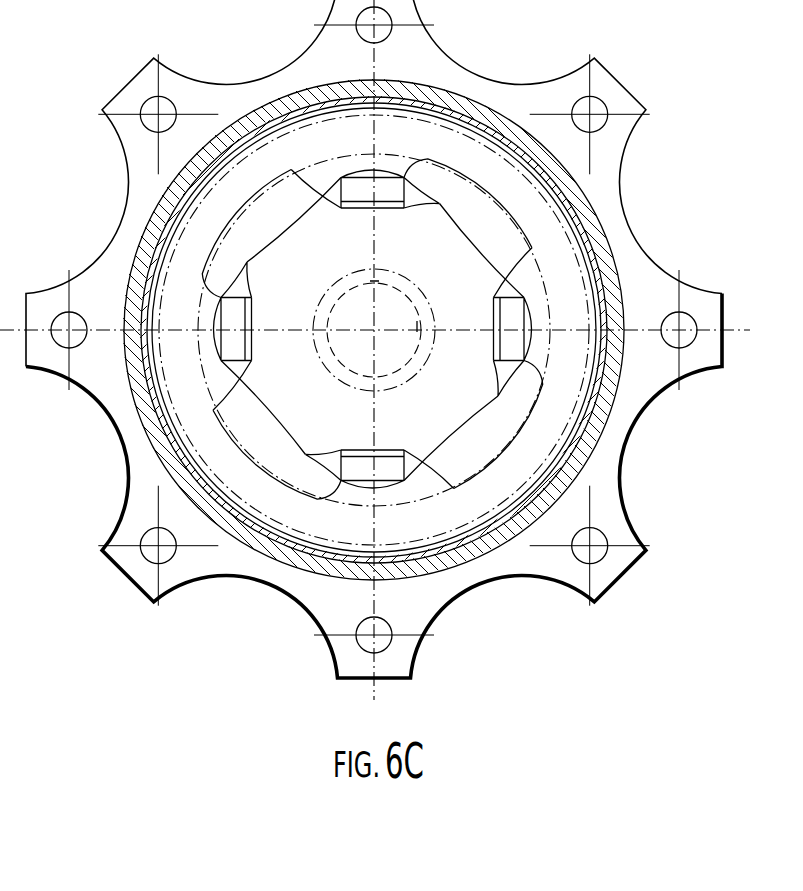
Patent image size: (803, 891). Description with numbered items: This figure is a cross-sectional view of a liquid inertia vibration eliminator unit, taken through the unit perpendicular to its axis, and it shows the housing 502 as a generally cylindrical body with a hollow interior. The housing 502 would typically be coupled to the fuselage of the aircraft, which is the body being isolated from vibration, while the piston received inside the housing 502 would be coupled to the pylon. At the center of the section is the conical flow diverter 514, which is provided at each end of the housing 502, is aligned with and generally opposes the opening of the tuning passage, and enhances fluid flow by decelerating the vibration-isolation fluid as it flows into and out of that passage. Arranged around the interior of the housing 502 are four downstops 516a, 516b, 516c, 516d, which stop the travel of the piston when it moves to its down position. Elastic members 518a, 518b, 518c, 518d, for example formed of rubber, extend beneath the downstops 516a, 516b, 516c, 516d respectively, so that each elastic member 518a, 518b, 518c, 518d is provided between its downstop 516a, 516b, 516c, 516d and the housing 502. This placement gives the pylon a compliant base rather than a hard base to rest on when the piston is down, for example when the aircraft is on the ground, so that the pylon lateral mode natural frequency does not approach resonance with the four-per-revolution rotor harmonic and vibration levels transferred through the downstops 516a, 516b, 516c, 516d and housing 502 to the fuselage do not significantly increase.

The housing 502 is at (612, 243).
The conical flow diverter 514 is at (418, 355).
The downstop 516a is at (410, 468).
The downstop 516b is at (236, 386).
The downstop 516c is at (421, 203).
The downstop 516d is at (503, 292).
The elastic member 518a is at (316, 465).
The elastic member 518b is at (247, 261).
The elastic member 518c is at (300, 165).
The elastic member 518d is at (498, 393).